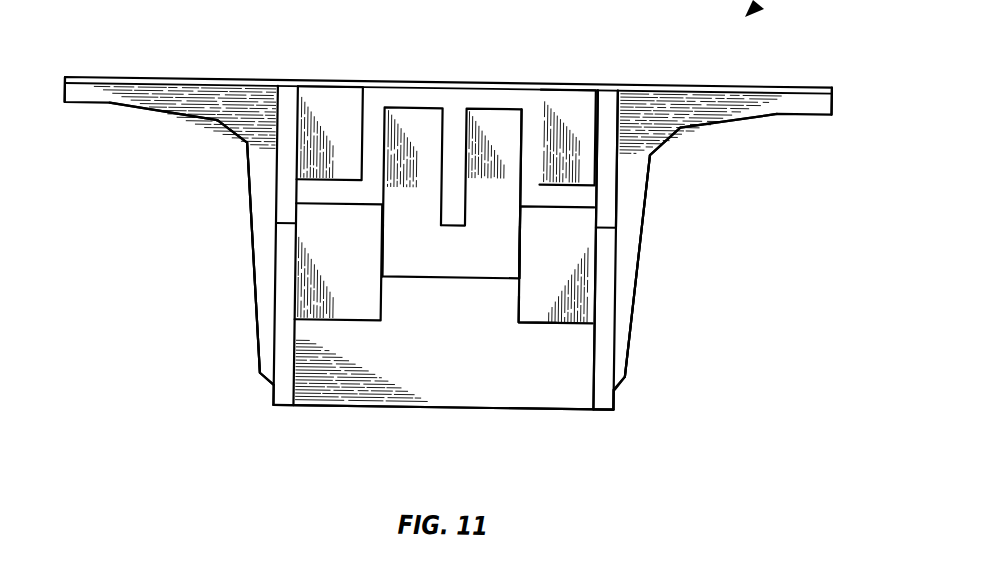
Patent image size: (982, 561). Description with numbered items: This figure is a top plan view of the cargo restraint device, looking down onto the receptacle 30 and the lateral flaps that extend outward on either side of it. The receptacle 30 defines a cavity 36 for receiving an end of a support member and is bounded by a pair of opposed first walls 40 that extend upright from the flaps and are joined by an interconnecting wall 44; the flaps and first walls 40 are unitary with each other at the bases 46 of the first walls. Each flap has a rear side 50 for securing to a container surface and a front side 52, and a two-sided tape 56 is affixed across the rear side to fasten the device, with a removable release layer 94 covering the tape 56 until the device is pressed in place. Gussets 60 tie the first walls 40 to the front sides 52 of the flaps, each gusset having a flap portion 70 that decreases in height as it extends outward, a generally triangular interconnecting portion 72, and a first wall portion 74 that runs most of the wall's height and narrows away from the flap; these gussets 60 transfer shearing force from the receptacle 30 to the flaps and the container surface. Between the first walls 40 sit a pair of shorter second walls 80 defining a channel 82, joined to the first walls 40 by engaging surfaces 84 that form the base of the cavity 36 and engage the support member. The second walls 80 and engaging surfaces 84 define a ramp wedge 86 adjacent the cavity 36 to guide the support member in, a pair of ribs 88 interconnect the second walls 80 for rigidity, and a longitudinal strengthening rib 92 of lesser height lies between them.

The receptacle 30 is at (617, 210).
The cavity 36 is at (596, 392).
The first walls 40 is at (277, 356).
The interconnecting wall 44 is at (452, 400).
The bases 46 is at (621, 112).
The rear side 50 is at (115, 77).
The front side 52 is at (110, 102).
The two-sided tape 56 is at (698, 89).
The gussets 60 is at (264, 182).
The flap portion 70 is at (221, 121).
The interconnecting portion 72 is at (259, 125).
The first wall portion 74 is at (254, 227).
The second walls 80 is at (522, 232).
The channel 82 is at (518, 214).
The engaging surfaces 84 is at (382, 234).
The ramp wedge 86 is at (540, 306).
The ribs 88 is at (411, 182).
The longitudinal strengthening rib 92 is at (453, 112).
The release layer 94 is at (257, 77).